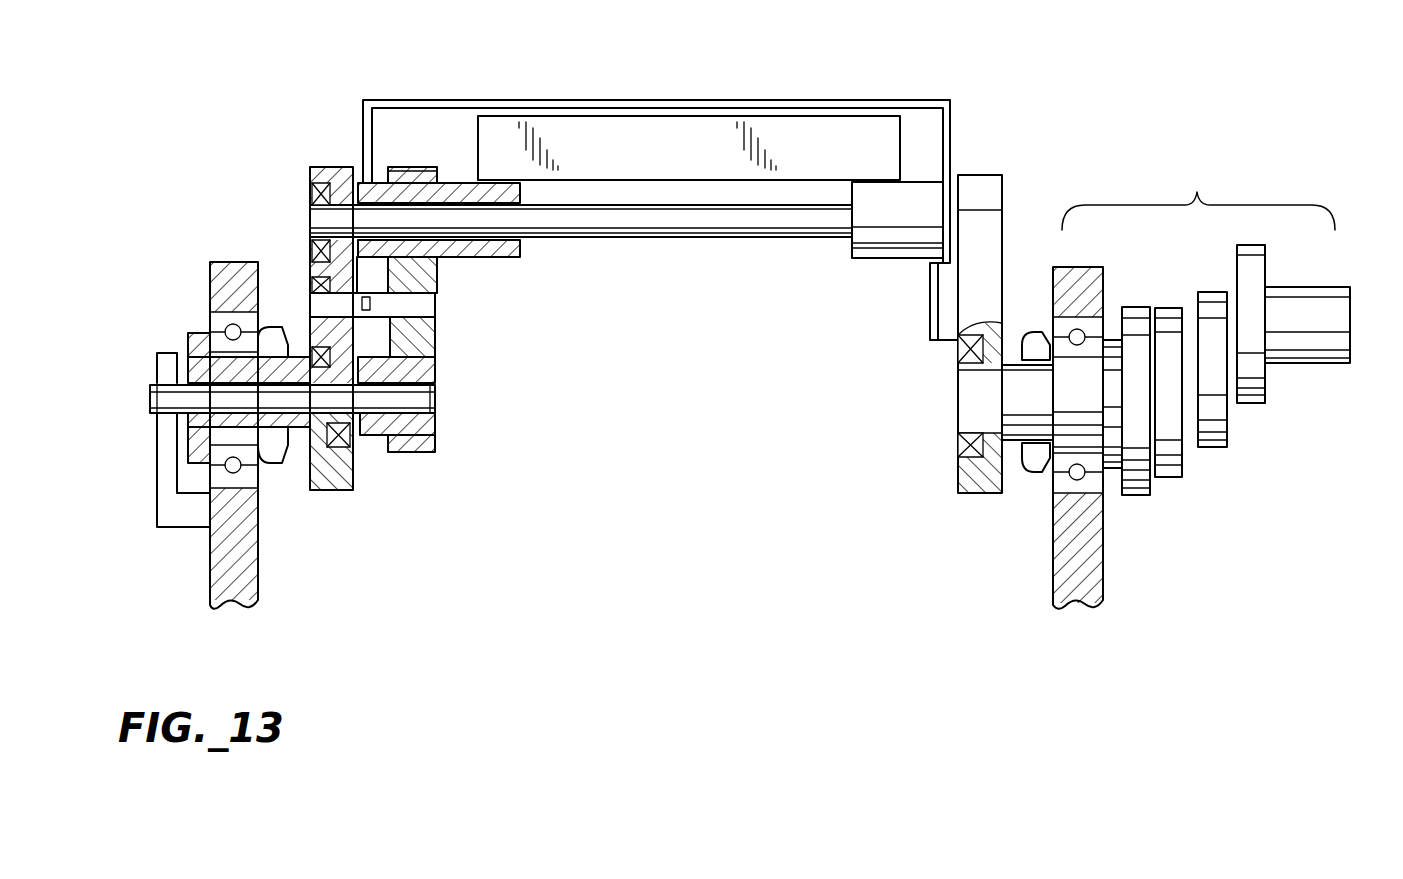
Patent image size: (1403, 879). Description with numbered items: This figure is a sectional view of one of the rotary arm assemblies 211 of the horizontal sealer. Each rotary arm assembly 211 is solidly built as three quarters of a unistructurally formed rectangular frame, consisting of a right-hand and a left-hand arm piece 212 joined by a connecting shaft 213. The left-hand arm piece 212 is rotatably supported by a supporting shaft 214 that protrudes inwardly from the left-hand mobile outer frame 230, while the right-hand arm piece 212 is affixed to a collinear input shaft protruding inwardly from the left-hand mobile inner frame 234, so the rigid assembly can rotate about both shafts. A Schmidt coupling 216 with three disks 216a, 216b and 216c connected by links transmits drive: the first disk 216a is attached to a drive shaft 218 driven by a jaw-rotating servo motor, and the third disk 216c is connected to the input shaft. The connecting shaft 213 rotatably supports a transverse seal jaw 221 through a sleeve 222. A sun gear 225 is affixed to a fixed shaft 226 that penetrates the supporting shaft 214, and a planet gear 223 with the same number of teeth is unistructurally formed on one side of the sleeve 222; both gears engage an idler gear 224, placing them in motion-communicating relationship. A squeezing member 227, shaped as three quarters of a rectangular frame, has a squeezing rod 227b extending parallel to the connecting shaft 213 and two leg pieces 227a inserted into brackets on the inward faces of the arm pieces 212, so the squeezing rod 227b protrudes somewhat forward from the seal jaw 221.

The rotary arm assembly 211 is at (1086, 92).
The arm piece 212 is at (310, 268).
The connecting shaft 213 is at (643, 215).
The supporting shaft 214 is at (198, 335).
The Schmidt coupling 216 is at (1197, 198).
The first disk 216a is at (1213, 297).
The second disk 216b is at (1167, 307).
The third disk 216c is at (1133, 307).
The drive shaft 218 is at (1290, 358).
The transverse seal jaw 221 is at (790, 128).
The sleeve 222 is at (462, 245).
The planet gear 223 is at (398, 168).
The idler gear 224 is at (437, 365).
The sun gear 225 is at (420, 450).
The fixed shaft 226 is at (437, 405).
The squeezing member 227 is at (461, 94).
The leg piece 227a is at (953, 132).
The squeezing rod 227b is at (588, 100).
The mobile outer frame 230 is at (262, 540).
The mobile inner frame 234 is at (1092, 530).